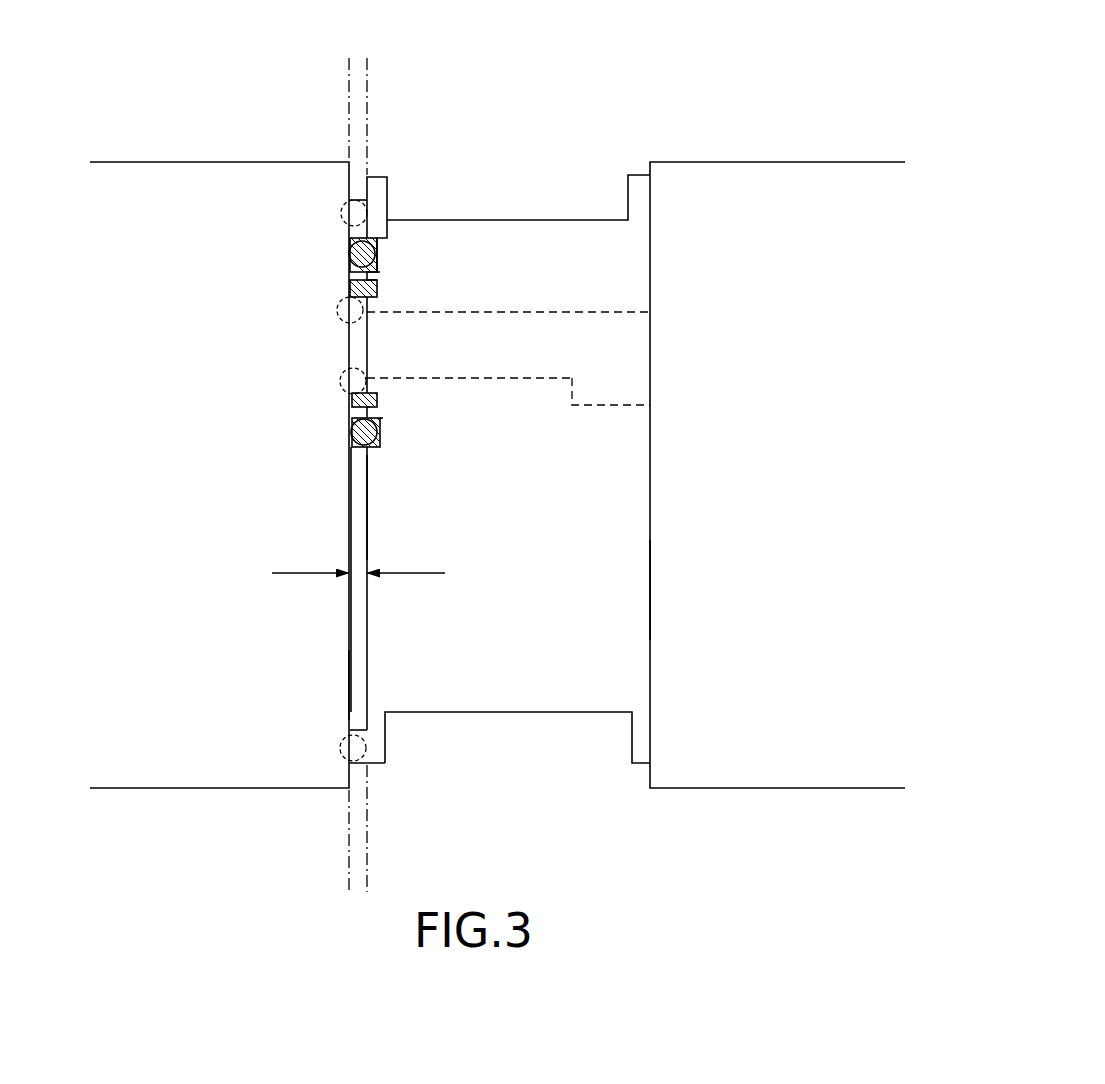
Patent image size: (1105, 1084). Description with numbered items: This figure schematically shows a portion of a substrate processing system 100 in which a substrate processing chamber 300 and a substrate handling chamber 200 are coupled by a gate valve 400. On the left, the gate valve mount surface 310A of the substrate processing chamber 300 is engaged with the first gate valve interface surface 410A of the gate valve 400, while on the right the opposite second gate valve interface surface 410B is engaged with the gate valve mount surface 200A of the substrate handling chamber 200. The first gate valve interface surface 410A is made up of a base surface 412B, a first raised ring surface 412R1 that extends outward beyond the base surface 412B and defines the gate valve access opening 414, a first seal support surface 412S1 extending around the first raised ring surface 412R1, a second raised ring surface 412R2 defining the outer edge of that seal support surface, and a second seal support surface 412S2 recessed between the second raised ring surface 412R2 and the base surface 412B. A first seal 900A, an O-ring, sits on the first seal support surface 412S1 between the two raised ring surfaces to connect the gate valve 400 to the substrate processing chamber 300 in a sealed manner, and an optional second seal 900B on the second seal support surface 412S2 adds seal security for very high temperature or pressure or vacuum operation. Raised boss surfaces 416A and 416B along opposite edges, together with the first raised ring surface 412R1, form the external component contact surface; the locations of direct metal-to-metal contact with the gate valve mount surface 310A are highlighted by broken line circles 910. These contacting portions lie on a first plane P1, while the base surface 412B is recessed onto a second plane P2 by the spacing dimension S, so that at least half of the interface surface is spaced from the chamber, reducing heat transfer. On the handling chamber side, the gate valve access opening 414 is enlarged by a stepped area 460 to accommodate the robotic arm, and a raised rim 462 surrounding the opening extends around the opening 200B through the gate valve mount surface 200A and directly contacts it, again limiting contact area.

The substrate processing system 100 is at (958, 128).
The substrate handling chamber 200 is at (755, 160).
The gate valve mount surface 200A is at (652, 612).
The opening 200B is at (660, 325).
The substrate processing chamber 300 is at (183, 160).
The gate valve mount surface 310A is at (355, 677).
The gate valve 400 is at (598, 182).
The first gate valve interface surface 410A is at (360, 631).
The second gate valve interface surface 410B is at (650, 572).
The base surface 412B is at (370, 501).
The first raised ring surface 412R1 is at (352, 297).
The second raised ring surface 412R2 is at (362, 274).
The first seal support surface 412S1 is at (380, 272).
The second seal support surface 412S2 is at (379, 272).
The gate valve access opening 414 is at (613, 347).
The first set of raised boss surfaces 416A is at (355, 197).
The second set of raised boss surfaces 416B is at (352, 757).
The stepped area 460 is at (580, 392).
The raised rim 462 is at (646, 570).
The first seal 900A is at (377, 290).
The second seal 900B is at (384, 220).
The broken line circles 910 is at (330, 222).
The first plane P1 is at (345, 93).
The second plane P2 is at (370, 70).
The spacing dimension S is at (367, 573).